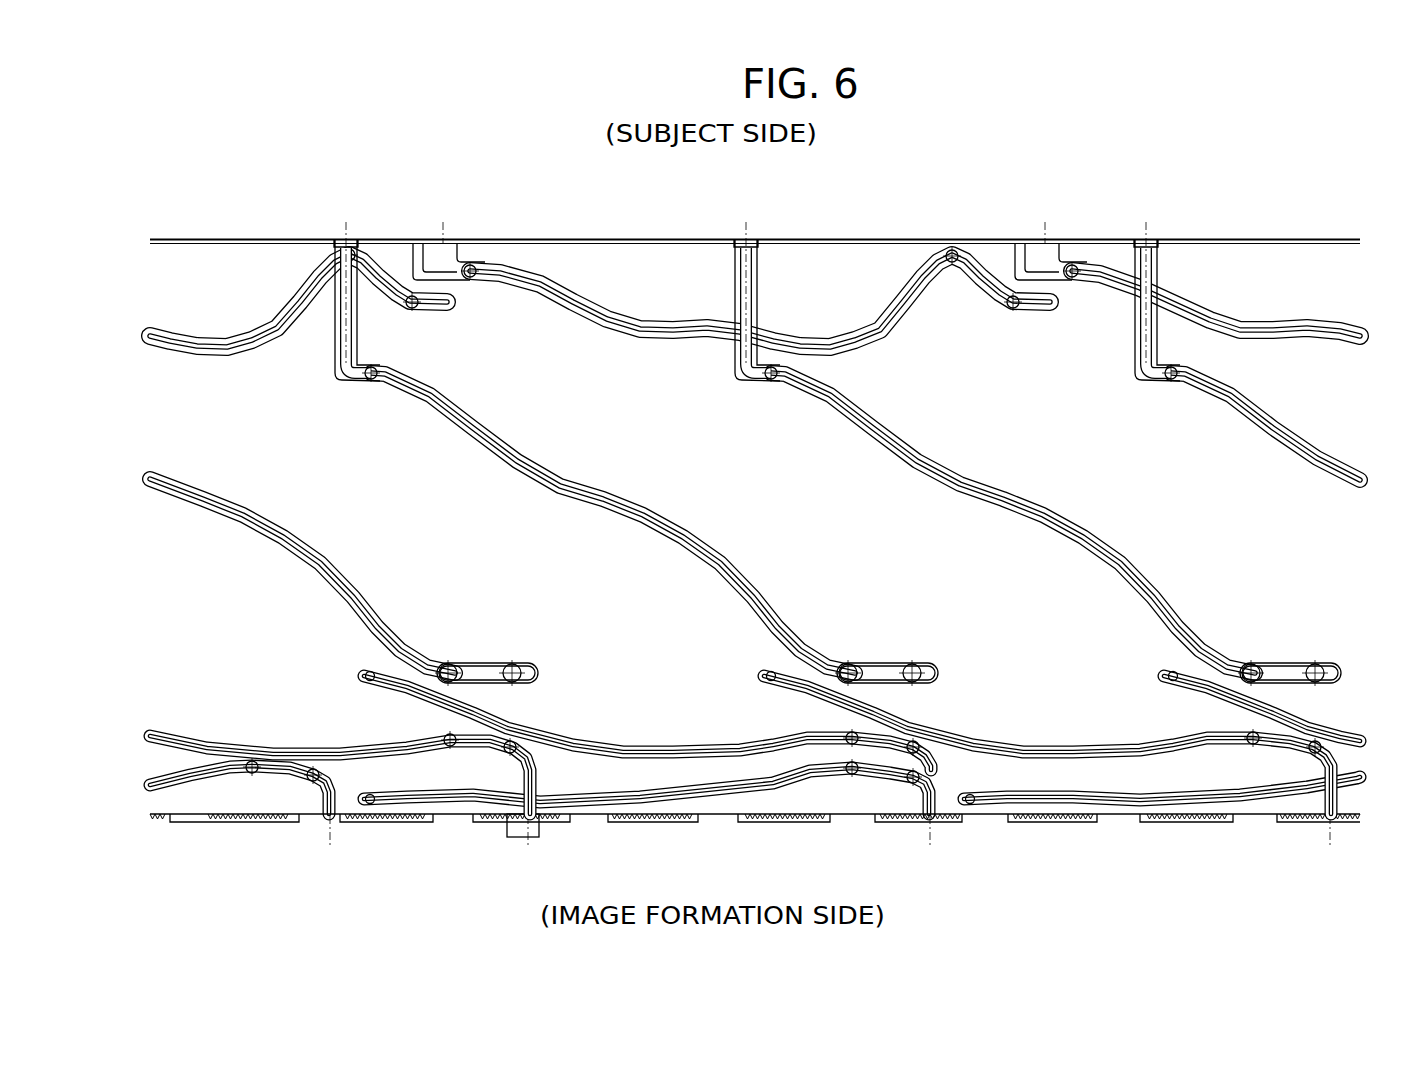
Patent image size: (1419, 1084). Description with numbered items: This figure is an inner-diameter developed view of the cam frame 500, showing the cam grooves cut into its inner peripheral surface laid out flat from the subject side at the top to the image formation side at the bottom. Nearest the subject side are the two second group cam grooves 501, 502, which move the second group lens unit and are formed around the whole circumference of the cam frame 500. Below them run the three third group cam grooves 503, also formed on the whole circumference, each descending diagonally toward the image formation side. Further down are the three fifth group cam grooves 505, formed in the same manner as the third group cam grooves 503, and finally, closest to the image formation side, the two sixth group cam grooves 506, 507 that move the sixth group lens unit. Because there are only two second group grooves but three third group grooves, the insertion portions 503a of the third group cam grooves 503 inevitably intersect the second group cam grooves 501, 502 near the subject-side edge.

The cam frame 500 is at (808, 270).
The second group cam groove 501 is at (980, 277).
The second group cam groove 502 is at (283, 302).
The third group cam groove 503 is at (320, 562).
The insertion portion 503a is at (347, 290).
The fifth group cam groove 505 is at (190, 738).
The sixth group cam groove 506 is at (793, 782).
The sixth group cam groove 507 is at (180, 787).